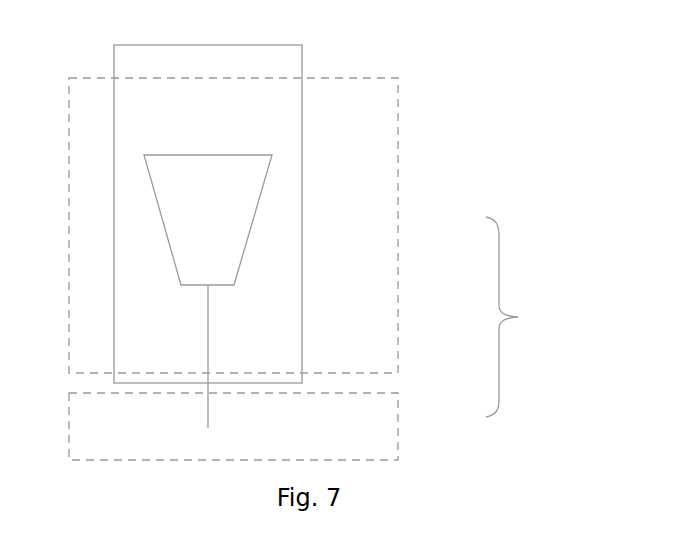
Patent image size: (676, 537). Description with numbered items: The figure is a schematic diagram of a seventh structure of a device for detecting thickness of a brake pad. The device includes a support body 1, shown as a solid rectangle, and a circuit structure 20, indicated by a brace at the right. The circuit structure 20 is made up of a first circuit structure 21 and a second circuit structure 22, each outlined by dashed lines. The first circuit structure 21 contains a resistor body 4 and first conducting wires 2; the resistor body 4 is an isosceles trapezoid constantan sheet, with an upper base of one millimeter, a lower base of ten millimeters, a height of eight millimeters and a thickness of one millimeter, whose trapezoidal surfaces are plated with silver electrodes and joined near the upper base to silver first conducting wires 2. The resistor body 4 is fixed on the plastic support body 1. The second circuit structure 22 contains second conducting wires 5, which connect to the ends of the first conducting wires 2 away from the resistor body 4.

The support body 1 is at (302, 45).
The first conducting wire 2 is at (208, 338).
The resistor body 4 is at (208, 155).
The second conducting wire 5 is at (208, 421).
The circuit structure 20 is at (517, 317).
The first circuit structure 21 is at (398, 226).
The second circuit structure 22 is at (398, 421).